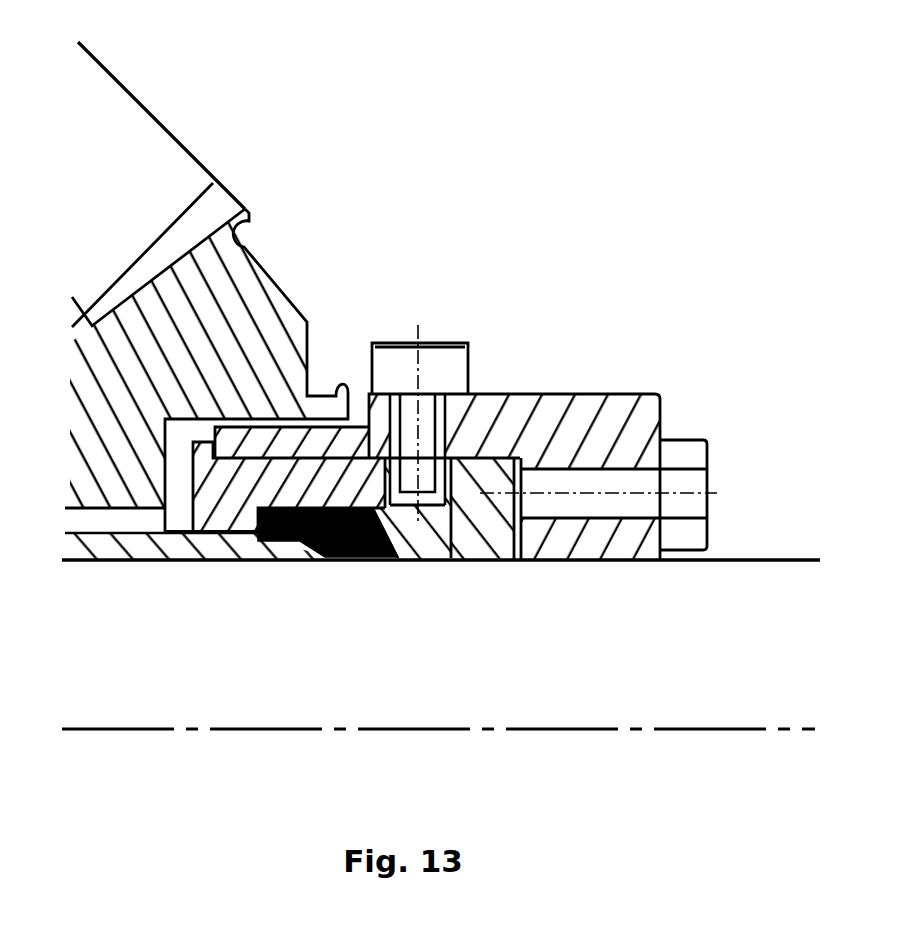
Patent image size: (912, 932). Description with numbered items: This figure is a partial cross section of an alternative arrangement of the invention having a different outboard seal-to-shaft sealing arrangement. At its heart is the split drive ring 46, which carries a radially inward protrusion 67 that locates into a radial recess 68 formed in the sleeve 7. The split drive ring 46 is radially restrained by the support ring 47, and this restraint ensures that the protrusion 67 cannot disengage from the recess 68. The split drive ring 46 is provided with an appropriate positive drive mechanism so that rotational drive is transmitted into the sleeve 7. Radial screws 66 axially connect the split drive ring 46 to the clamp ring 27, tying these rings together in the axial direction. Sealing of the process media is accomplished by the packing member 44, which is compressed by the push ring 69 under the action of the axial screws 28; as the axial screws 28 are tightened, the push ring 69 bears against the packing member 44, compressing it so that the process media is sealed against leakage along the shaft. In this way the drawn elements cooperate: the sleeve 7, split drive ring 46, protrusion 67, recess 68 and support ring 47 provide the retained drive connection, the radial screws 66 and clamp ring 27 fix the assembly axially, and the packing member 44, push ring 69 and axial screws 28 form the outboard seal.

The sleeve 7 is at (118, 543).
The clamp ring 27 is at (603, 430).
The axial screws 28 is at (678, 485).
The packing member 44 is at (358, 548).
The split drive ring 46 is at (218, 492).
The support ring 47 is at (347, 436).
The radial screws 66 is at (443, 372).
The protrusion 67 is at (253, 533).
The recess 68 is at (205, 534).
The push ring 69 is at (467, 527).